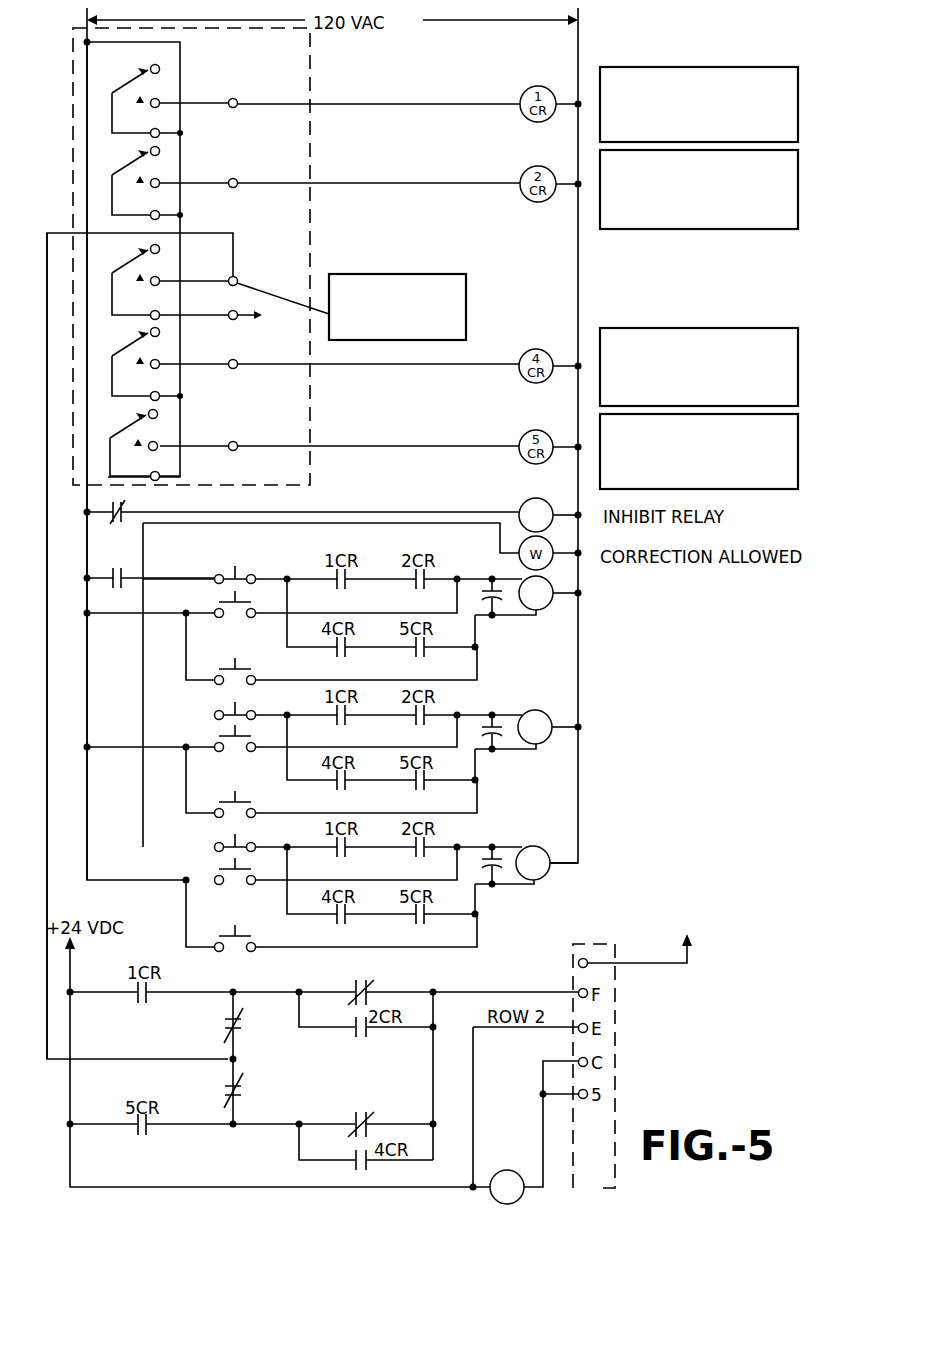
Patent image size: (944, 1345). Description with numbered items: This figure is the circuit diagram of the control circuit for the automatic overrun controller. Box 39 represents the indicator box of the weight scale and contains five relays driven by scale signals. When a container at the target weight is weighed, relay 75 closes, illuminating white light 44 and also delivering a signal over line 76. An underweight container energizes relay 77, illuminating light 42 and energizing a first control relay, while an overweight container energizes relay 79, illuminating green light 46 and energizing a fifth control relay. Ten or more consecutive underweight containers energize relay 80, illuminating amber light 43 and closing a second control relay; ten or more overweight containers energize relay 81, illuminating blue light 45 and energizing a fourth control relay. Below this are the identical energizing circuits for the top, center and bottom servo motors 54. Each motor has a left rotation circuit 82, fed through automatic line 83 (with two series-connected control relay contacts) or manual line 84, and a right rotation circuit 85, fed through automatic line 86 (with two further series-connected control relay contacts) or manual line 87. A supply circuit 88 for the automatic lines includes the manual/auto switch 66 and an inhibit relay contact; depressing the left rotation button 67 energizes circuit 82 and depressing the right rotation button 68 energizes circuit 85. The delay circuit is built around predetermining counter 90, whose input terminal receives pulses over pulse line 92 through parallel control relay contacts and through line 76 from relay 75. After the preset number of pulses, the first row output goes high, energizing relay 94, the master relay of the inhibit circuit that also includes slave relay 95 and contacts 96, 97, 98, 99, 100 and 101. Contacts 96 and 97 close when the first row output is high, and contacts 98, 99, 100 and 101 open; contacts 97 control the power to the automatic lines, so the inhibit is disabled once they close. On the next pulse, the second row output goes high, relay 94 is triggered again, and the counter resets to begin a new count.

The indicator box 39 is at (310, 60).
The light 42 is at (740, 67).
The amber light 43 is at (712, 229).
The white light 44 is at (466, 300).
The blue light 45 is at (700, 328).
The green light 46 is at (735, 489).
The servo motors 54 is at (540, 610).
The manual/auto switch 66 is at (223, 568).
The left rotation button 67 is at (232, 596).
The right rotation button 68 is at (230, 664).
The relay 75 is at (134, 266).
The line 76 is at (47, 548).
The relay 77 is at (134, 86).
The relay 79 is at (134, 430).
The relay 80 is at (134, 168).
The relay 81 is at (134, 350).
The left rotation circuit 82 is at (508, 566).
The automatic line 83 is at (455, 575).
The manual line 84 is at (296, 613).
The right rotation circuit 85 is at (478, 624).
The automatic line 86 is at (428, 642).
The manual line 87 is at (344, 680).
The supply circuit 88 is at (85, 493).
The predetermining counter 90 is at (580, 946).
The pulse line 92 is at (467, 993).
The relay 94 is at (500, 1172).
The slave relay 95 is at (524, 502).
The contacts 96 is at (118, 523).
The contacts 97 is at (118, 590).
The contacts 98 is at (224, 1026).
The contacts 99 is at (220, 1092).
The contacts 100 is at (376, 990).
The contacts 101 is at (374, 1122).